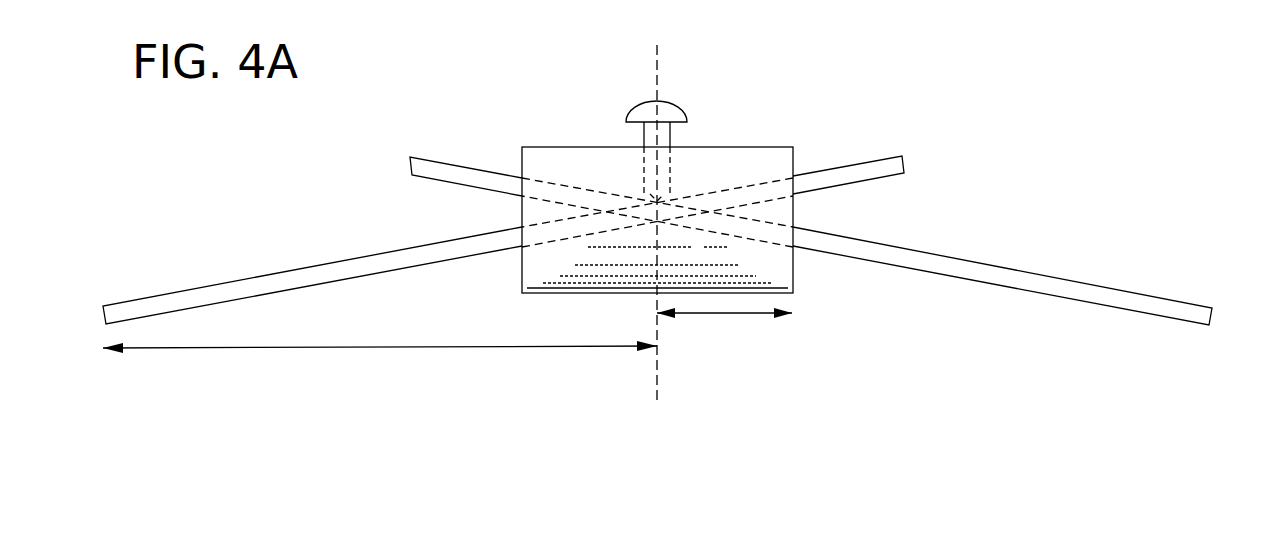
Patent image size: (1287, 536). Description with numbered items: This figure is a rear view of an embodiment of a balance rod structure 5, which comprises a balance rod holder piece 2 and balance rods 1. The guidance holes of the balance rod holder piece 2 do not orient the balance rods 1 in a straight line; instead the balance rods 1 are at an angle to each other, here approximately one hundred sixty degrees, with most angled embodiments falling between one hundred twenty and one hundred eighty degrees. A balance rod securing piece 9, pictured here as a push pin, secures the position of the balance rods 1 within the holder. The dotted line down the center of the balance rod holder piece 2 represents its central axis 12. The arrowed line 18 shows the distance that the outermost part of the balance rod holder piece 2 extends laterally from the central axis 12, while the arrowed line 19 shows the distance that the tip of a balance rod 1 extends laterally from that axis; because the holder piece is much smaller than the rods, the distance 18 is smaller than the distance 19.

The balance rod 1 is at (960, 278).
The balance rod holder piece 2 is at (778, 147).
The balance rod structure 5 is at (464, 126).
The balance rod securing piece 9 is at (673, 103).
The central axis of the balance rod holder piece 12 is at (660, 388).
The distance of lateral extension of the outermost part of the balance rod holder pi 18 is at (786, 318).
The distance of lateral extension of the tip of a balance rod 19 is at (427, 347).